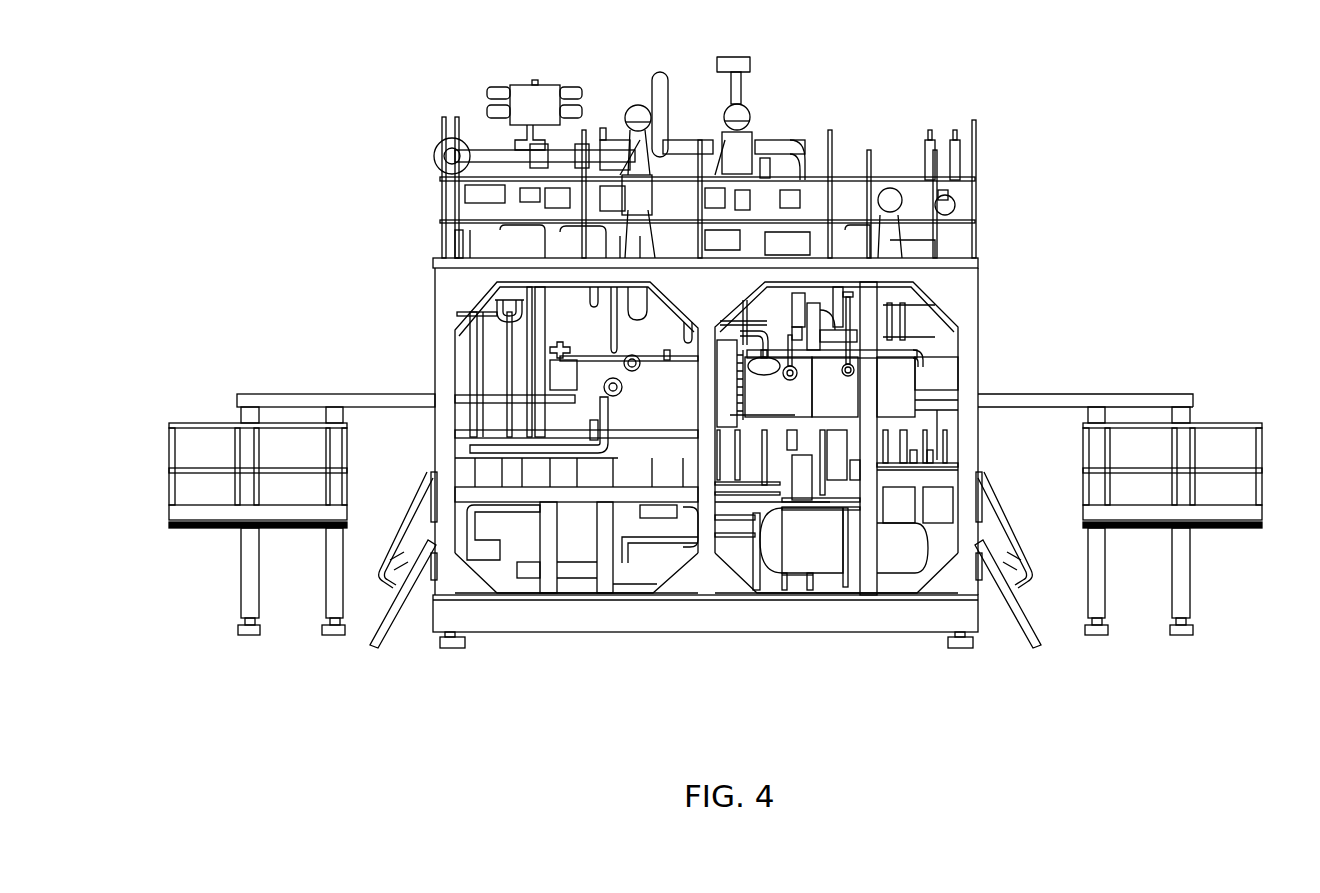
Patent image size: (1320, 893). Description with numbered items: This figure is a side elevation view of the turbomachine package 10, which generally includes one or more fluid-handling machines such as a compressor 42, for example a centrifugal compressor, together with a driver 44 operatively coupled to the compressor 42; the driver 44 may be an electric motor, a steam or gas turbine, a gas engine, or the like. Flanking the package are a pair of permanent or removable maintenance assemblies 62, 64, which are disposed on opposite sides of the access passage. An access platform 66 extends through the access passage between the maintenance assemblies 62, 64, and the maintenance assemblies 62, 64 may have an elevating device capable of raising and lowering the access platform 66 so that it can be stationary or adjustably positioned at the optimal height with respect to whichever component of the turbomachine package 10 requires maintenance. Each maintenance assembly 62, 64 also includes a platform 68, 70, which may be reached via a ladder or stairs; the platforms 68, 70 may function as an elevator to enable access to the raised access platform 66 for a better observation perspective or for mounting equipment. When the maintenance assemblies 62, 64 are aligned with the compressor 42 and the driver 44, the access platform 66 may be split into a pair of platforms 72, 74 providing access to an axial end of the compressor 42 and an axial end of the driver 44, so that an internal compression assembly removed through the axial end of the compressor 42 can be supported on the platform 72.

The turbomachine package 10 is at (952, 72).
The compressor 42 is at (905, 378).
The driver 44 is at (583, 343).
The maintenance assembly 62 is at (1209, 305).
The maintenance assembly 64 is at (186, 372).
The access platform 66 is at (1023, 400).
The platform 68 is at (1258, 513).
The platform 70 is at (172, 511).
The platform 72 is at (1058, 407).
The platform 74 is at (383, 398).